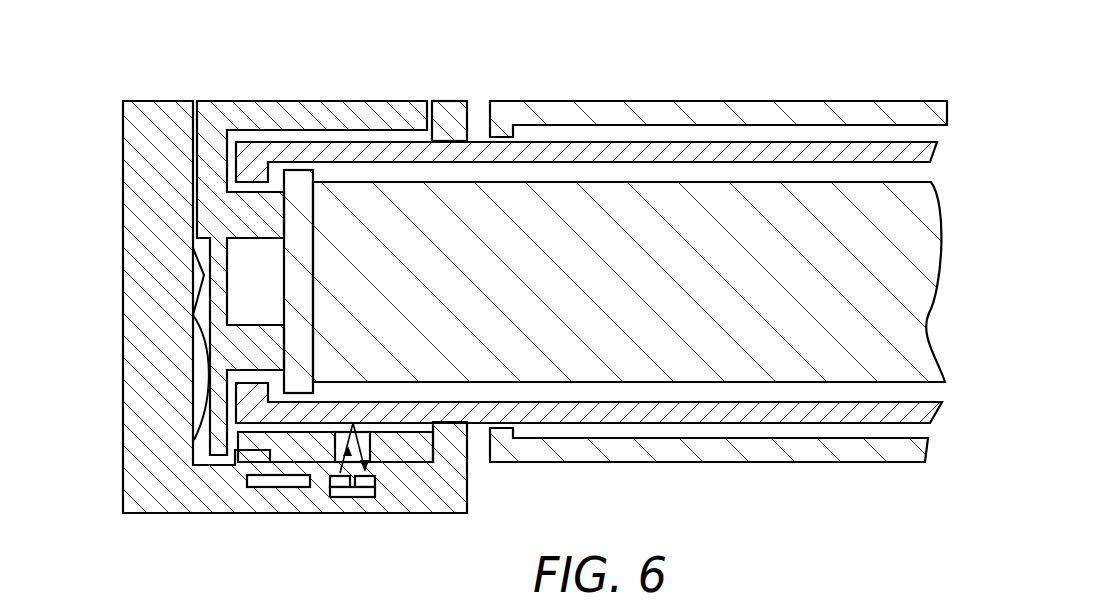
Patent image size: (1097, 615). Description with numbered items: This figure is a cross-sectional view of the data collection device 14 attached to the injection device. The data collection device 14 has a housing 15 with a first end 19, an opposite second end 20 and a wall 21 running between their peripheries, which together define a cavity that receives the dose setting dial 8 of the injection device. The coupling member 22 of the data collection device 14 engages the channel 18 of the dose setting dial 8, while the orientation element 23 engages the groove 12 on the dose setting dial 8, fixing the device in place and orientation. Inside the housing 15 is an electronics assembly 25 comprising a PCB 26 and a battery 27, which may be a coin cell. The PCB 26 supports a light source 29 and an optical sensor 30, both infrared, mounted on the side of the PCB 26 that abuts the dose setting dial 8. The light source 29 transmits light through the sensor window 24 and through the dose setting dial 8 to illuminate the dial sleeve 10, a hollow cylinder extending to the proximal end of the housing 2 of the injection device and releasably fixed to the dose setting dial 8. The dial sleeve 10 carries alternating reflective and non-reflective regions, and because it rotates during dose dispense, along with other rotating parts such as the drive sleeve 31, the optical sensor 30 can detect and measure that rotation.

The data collection device 14 is at (176, 68).
The housing 15 is at (131, 103).
The dose setting dial 8 is at (217, 103).
The second end 20 is at (448, 103).
The drive sleeve 31 is at (665, 202).
The channel 18 is at (193, 248).
The coupling member 22 is at (193, 275).
The battery 27 is at (283, 482).
The groove 12 is at (240, 447).
The first end 19 is at (128, 500).
The wall 21 is at (203, 510).
The orientation element 23 is at (262, 466).
The electronics assembly 25 is at (297, 498).
The light source 29 is at (338, 478).
The PCB 26 is at (355, 498).
The optical sensor 30 is at (368, 480).
The sensor window 24 is at (378, 460).
The housing 2 is at (643, 456).
The dial sleeve 10 is at (840, 416).